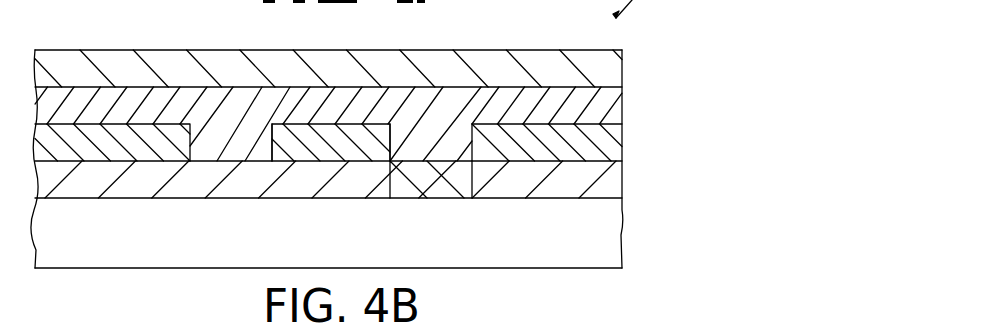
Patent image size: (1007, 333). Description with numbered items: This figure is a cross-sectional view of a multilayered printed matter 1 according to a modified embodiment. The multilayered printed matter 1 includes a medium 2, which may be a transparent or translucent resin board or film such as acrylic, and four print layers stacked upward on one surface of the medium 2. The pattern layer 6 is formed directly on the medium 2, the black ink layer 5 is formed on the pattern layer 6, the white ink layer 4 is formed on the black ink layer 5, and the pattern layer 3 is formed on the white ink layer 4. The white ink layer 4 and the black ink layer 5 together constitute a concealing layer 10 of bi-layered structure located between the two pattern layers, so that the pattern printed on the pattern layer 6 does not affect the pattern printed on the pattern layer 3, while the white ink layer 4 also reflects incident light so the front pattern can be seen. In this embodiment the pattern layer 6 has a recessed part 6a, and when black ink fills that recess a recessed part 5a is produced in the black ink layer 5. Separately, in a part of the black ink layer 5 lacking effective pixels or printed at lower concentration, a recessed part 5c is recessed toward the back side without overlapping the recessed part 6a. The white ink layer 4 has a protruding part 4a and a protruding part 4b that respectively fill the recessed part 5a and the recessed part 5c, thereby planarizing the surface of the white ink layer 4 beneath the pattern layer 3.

The multilayered printed matter 1 is at (631, 332).
The medium 2 is at (623, 237).
The pattern layer 3 is at (623, 73).
The white ink layer 4 is at (352, 175).
The protruding part 4a is at (424, 162).
The protruding part 4b is at (208, 161).
The black ink layer 5 is at (352, 191).
The recessed part 5a is at (403, 162).
The recessed part 5c is at (263, 163).
The pattern layer 6 is at (352, 203).
The recessed part 6a is at (473, 181).
The concealing layer 10 is at (372, 175).